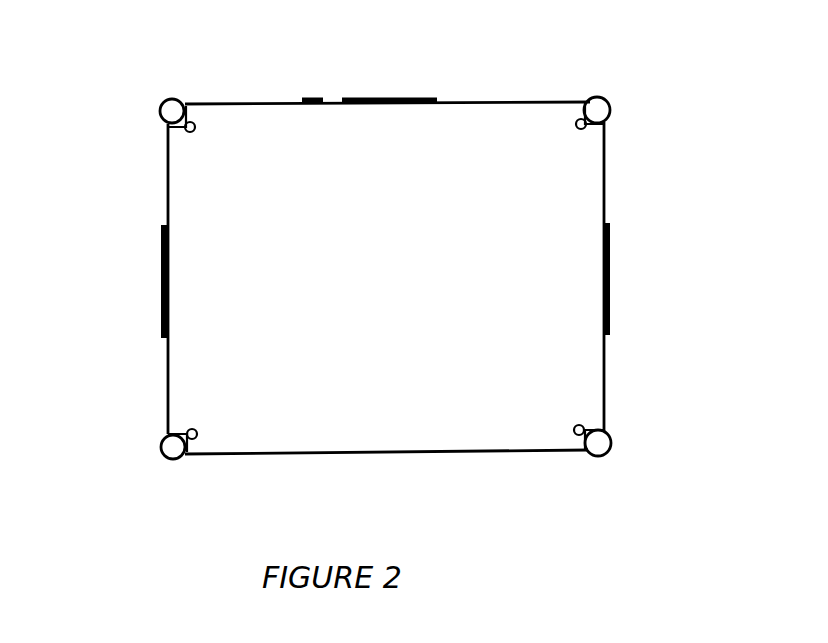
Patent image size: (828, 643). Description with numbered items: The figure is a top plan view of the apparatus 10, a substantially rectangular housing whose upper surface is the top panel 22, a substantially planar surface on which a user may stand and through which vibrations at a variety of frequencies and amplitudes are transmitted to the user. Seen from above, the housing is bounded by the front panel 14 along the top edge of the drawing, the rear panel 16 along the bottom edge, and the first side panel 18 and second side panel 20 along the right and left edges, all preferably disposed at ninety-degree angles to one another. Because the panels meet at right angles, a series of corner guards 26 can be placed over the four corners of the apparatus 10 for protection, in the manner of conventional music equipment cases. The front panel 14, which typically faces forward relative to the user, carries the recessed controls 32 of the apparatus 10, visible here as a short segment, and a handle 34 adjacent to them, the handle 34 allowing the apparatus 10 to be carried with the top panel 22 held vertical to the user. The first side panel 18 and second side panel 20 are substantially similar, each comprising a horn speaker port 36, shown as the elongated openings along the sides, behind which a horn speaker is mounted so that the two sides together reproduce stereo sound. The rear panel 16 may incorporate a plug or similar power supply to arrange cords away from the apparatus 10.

The apparatus 10 is at (112, 59).
The front panel 14 is at (498, 102).
The rear panel 16 is at (354, 455).
The first side panel 18 is at (606, 178).
The second side panel 20 is at (166, 187).
The top panel 22 is at (386, 282).
The corner guards 26 is at (161, 104).
The controls 32 is at (320, 100).
The handle 34 is at (380, 100).
The horn speaker port 36 is at (162, 262).